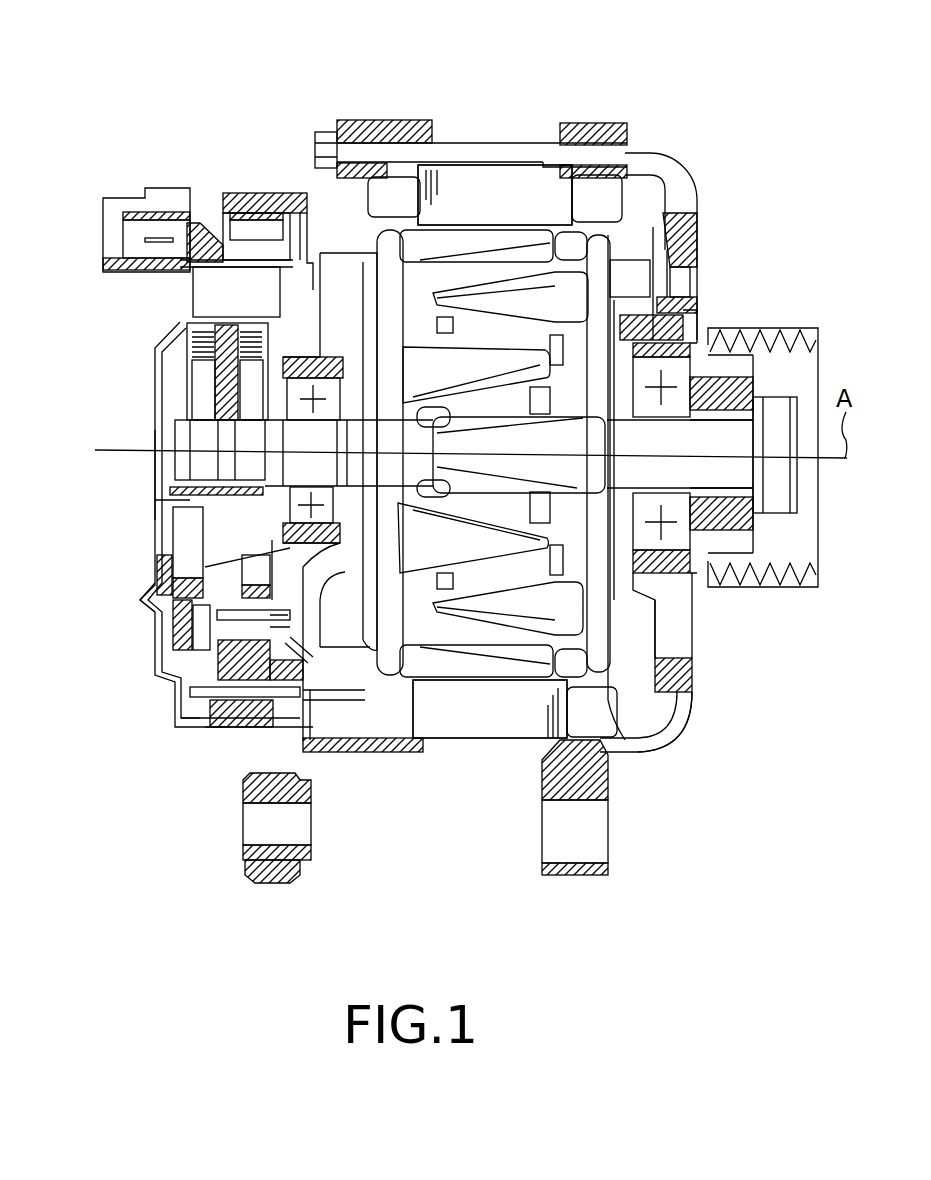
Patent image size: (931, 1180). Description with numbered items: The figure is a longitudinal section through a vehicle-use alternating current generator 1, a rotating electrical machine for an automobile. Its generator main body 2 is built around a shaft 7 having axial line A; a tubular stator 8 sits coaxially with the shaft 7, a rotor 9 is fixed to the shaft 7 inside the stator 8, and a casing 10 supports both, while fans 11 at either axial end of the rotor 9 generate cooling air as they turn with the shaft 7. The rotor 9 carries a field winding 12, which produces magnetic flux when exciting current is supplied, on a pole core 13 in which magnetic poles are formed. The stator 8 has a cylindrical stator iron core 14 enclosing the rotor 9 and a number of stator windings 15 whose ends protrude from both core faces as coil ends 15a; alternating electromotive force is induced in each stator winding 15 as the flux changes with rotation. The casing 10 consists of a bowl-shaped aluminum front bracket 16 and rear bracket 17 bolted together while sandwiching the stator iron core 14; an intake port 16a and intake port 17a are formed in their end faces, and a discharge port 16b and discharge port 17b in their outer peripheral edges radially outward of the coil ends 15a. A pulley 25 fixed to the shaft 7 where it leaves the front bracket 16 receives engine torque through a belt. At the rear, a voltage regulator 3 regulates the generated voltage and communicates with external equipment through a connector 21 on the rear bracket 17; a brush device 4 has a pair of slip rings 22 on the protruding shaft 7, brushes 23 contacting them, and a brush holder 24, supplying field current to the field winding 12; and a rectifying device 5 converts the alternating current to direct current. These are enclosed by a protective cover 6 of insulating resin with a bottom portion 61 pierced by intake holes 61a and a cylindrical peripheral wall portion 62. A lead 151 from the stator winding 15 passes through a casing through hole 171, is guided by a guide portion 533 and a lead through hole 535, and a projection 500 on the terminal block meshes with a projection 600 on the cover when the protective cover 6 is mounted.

The vehicle-use alternating current generator 1 is at (729, 891).
The generator main body 2 is at (460, 118).
The voltage regulator 3 is at (216, 262).
The brush device 4 is at (187, 343).
The rectifying device 5 is at (195, 705).
The protective cover 6 is at (145, 598).
The shaft 7 is at (713, 440).
The stator 8 is at (486, 160).
The rotor 9 is at (497, 620).
The casing 10 is at (372, 128).
The fan 11 is at (353, 258).
The field winding 12 is at (465, 590).
The pole core 13 is at (517, 613).
The stator iron core 14 is at (518, 178).
The stator winding 15 is at (585, 168).
The coil end 15a is at (395, 175).
The front bracket 16 is at (697, 677).
The intake port 16a is at (673, 630).
The discharge port 16b is at (663, 723).
The rear bracket 17 is at (280, 190).
The intake port 17a is at (247, 548).
The discharge port 17b is at (340, 752).
The connector 21 is at (103, 243).
The slip ring 22 is at (200, 440).
The brush 23 is at (200, 400).
The brush holder 24 is at (195, 355).
The pulley 25 is at (795, 575).
The bottom portion 61 is at (165, 470).
The intake hole 61a is at (173, 530).
The cylindrical peripheral wall portion 62 is at (190, 725).
The lead 151 is at (253, 737).
The casing through hole 171 is at (310, 740).
The projection 500 is at (235, 725).
The guide portion 533 is at (190, 690).
The lead through hole 535 is at (213, 727).
The projection 600 is at (255, 705).